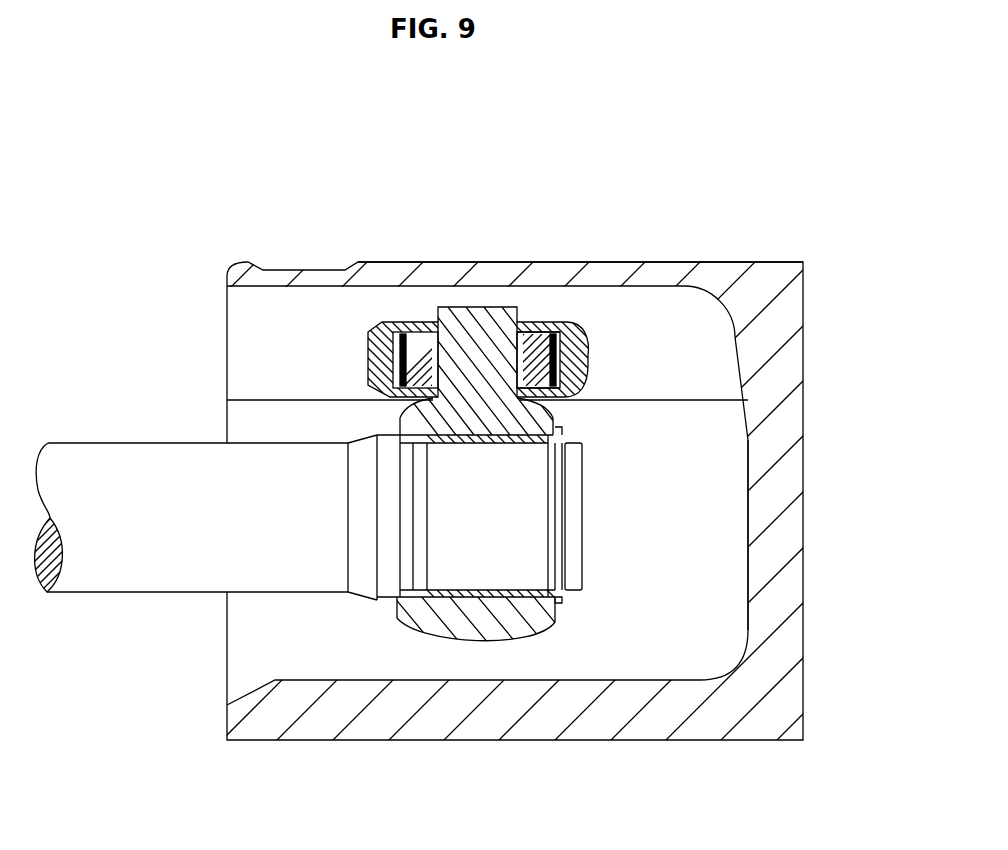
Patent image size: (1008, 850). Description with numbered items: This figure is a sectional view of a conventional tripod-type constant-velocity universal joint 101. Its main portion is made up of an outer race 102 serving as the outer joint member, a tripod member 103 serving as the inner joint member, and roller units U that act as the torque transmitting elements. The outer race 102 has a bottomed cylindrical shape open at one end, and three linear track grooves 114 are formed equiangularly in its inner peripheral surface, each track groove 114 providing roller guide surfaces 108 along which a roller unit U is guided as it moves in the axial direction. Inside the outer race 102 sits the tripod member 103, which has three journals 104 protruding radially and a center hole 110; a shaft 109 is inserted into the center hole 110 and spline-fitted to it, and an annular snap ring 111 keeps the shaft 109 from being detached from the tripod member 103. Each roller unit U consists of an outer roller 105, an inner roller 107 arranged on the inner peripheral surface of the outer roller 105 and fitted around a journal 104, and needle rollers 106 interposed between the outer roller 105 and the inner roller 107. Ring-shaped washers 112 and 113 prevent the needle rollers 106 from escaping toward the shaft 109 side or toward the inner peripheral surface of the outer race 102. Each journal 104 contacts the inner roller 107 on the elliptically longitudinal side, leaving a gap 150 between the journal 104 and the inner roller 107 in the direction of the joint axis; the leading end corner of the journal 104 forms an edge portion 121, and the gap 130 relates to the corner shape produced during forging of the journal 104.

The tripod-type constant-velocity universal joint 101 is at (702, 248).
The outer race 102 is at (432, 262).
The tripod member 103 is at (473, 628).
The journal 104 is at (485, 330).
The outer roller 105 is at (395, 350).
The needle rollers 106 is at (395, 366).
The inner roller 107 is at (413, 322).
The roller guide surface 108 is at (705, 358).
The shaft 109 is at (133, 576).
The center hole 110 is at (448, 582).
The snap ring 111 is at (566, 600).
The washer 112 is at (549, 325).
The washer 113 is at (557, 405).
The track groove 114 is at (630, 297).
The edge portion 121 is at (522, 312).
The gap 130 is at (558, 358).
The gap 150 is at (562, 378).
The roller unit U is at (592, 338).